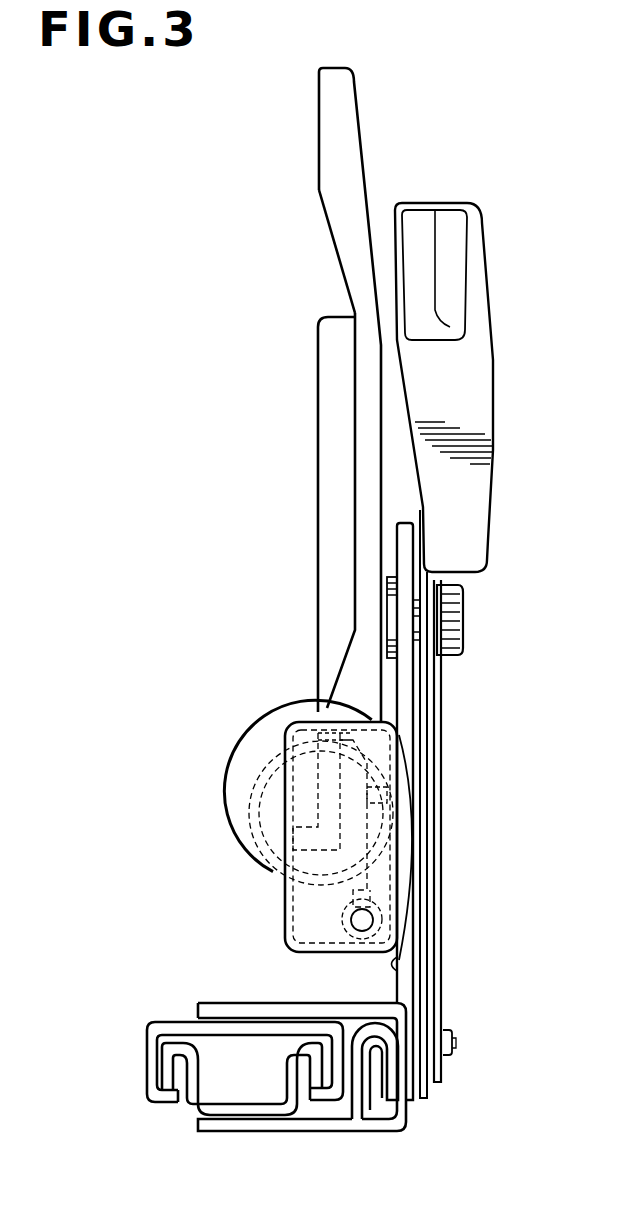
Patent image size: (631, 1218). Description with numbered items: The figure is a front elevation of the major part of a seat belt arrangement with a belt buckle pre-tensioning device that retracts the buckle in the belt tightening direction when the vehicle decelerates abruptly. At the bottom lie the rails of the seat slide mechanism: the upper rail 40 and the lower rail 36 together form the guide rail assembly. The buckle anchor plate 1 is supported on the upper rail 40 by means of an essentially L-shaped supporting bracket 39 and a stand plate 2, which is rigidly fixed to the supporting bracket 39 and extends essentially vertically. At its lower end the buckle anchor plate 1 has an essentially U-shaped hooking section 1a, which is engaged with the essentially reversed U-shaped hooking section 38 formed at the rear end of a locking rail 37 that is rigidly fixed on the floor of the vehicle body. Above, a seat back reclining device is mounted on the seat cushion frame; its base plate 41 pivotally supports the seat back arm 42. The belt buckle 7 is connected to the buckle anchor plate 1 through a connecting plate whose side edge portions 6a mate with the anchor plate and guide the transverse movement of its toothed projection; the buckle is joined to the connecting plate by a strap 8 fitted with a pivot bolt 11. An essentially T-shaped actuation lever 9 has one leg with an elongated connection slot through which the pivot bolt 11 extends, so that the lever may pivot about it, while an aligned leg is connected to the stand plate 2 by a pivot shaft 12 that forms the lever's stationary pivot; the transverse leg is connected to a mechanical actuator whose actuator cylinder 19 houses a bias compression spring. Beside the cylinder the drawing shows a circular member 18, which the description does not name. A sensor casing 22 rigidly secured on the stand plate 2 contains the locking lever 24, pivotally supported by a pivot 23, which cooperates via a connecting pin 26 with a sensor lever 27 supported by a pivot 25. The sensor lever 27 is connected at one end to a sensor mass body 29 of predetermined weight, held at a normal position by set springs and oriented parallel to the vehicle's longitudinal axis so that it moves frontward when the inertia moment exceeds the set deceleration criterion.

The buckle anchor plate 1 is at (403, 547).
The hooking section 1a is at (380, 1133).
The stand plate 2 is at (403, 913).
The side edge portions 6a is at (390, 603).
The belt buckle 7 is at (465, 397).
The strap 8 is at (432, 572).
The actuation lever 9 is at (440, 750).
The pivot bolt 11 is at (452, 625).
The pivot shaft 12 is at (456, 1042).
The rotary member 18 is at (293, 715).
The actuator cylinder 19 is at (273, 810).
The sensor casing 22 is at (285, 913).
The pivot 23 is at (302, 837).
The locking lever 24 is at (327, 777).
The pivot 25 is at (380, 797).
The connecting pin 26 is at (342, 763).
The sensor lever 27 is at (363, 883).
The sensor mass body 29 is at (360, 927).
The lower rail 36 is at (183, 1107).
The locking rail 37 is at (325, 1131).
The hooking section 38 is at (392, 1098).
The supporting bracket 39 is at (290, 1010).
The upper rail 40 is at (147, 1035).
The base plate 41 is at (335, 438).
The seat back arm 42 is at (350, 130).